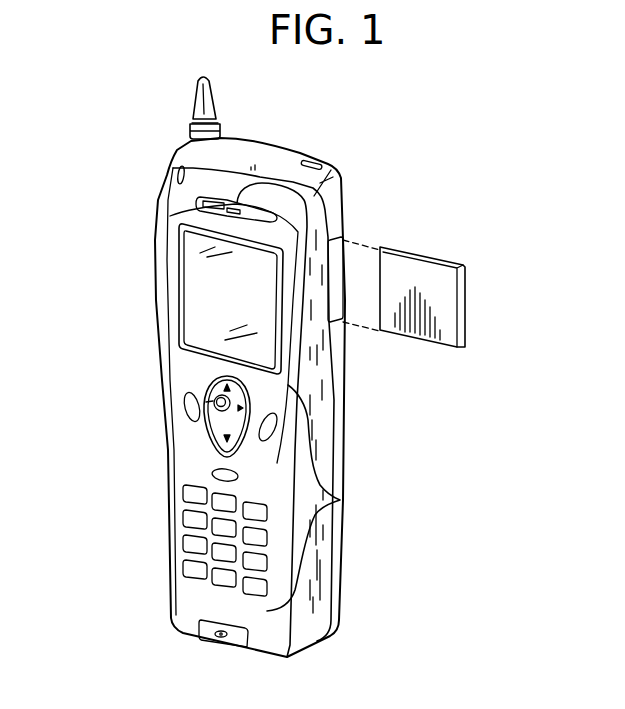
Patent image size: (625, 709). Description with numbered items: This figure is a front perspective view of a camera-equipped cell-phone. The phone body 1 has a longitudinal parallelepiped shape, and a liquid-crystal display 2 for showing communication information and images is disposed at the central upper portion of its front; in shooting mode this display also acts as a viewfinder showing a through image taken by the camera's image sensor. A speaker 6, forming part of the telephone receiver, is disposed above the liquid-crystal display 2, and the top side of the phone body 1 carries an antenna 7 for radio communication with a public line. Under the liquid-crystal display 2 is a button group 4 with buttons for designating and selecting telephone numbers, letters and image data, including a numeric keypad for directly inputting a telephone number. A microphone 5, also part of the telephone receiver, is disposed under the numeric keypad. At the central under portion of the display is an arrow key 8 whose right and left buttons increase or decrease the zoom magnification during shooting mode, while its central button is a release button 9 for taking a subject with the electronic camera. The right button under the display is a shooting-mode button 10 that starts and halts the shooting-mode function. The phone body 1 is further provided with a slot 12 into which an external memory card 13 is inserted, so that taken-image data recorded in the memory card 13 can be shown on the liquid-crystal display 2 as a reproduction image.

The phone body 1 is at (95, 147).
The liquid-crystal display 2 is at (200, 307).
The button group 4 is at (340, 500).
The microphone 5 is at (222, 634).
The speaker 6 is at (309, 190).
The antenna 7 is at (212, 92).
The arrow key 8 is at (207, 430).
The release button 9 is at (187, 393).
The shooting-mode button 10 is at (263, 441).
The slot 12 is at (350, 212).
The memory card 13 is at (447, 263).